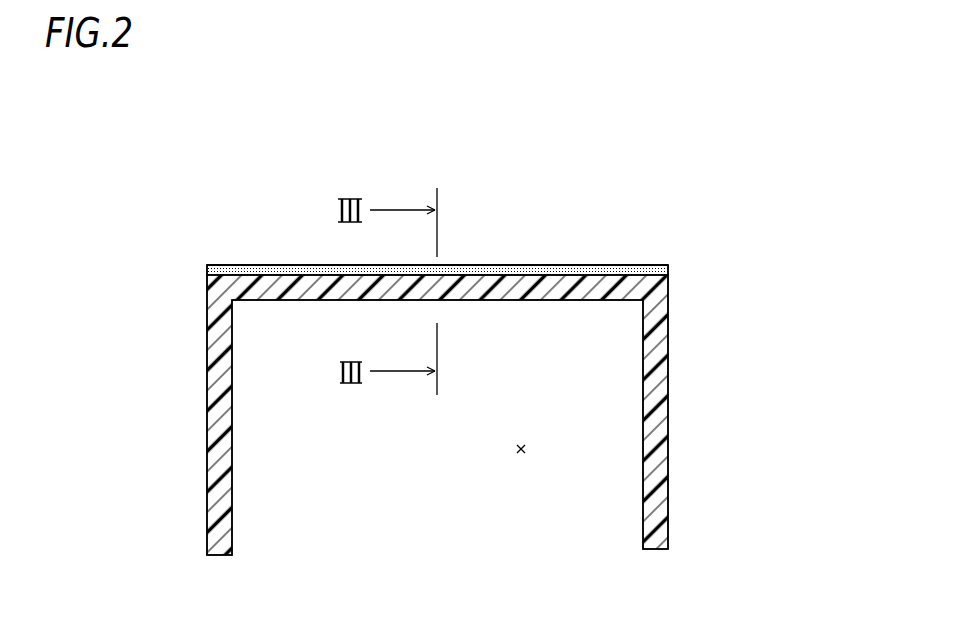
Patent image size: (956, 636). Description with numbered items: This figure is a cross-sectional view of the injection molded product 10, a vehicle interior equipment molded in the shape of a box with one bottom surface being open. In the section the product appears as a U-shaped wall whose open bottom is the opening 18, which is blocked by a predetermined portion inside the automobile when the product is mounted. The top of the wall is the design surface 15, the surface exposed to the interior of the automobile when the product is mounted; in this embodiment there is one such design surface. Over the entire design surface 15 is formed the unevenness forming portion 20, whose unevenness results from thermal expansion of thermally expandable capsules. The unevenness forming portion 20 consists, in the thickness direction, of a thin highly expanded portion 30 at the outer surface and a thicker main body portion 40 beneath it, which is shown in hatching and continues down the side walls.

The injection molded product 10 is at (652, 175).
The design surface 15 is at (262, 264).
The opening 18 is at (522, 458).
The unevenness forming portion 20 is at (517, 265).
The highly expanded portion 30 is at (668, 265).
The main body portion 40 is at (668, 313).